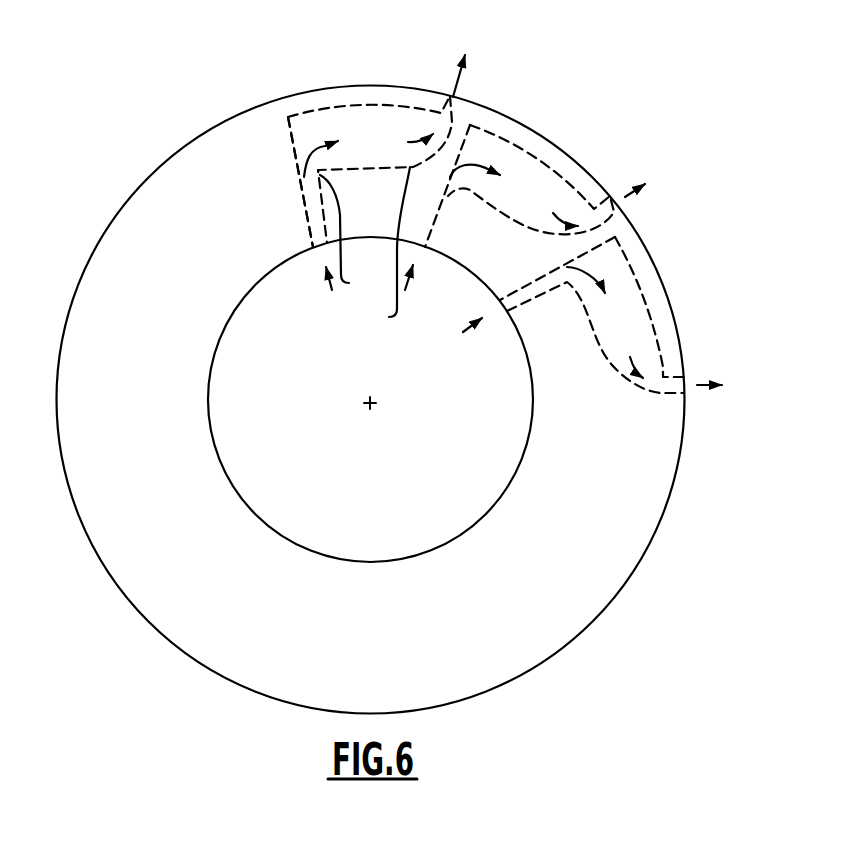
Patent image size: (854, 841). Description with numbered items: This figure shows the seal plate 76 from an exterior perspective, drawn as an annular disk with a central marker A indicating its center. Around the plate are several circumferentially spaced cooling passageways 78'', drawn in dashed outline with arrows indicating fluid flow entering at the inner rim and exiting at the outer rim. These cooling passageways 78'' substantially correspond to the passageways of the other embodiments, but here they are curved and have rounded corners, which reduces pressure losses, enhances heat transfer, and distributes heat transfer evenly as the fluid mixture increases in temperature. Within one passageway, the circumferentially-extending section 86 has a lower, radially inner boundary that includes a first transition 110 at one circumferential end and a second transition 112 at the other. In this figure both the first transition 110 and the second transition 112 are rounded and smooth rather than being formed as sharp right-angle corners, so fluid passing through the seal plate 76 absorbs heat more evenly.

The seal plate 76 is at (205, 233).
The cooling passageways 78'' is at (514, 209).
The circumferentially-extending section 86 is at (332, 133).
The first transition 110 is at (354, 238).
The second transition 112 is at (376, 250).
The axis A is at (366, 406).